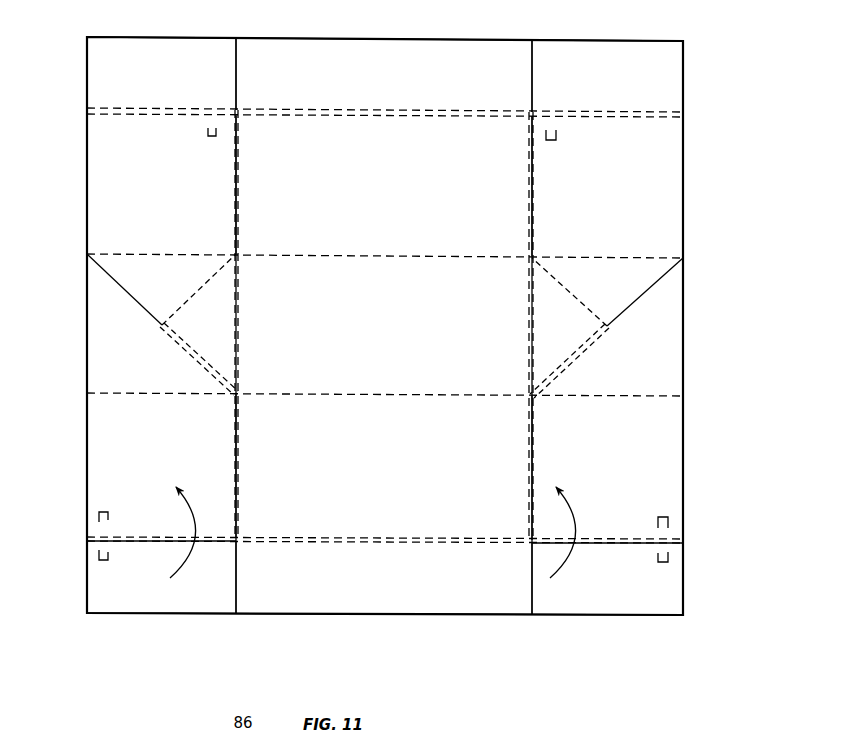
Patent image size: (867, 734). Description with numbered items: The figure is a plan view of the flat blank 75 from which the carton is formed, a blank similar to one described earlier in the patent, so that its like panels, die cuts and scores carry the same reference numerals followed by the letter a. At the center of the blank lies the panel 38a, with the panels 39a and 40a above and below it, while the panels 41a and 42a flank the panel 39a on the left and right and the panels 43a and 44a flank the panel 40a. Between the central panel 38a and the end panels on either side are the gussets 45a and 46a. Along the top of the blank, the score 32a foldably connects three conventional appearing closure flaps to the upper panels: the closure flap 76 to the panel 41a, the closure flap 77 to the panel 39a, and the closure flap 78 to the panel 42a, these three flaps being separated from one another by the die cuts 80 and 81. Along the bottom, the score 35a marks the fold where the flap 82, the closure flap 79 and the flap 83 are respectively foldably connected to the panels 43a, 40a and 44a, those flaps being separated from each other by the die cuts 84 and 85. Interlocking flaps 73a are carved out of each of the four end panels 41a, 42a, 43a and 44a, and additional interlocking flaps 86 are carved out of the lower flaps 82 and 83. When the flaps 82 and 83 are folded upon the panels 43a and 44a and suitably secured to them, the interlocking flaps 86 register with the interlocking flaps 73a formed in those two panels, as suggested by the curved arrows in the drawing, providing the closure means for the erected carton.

The blank 75 is at (708, 150).
The closure flap 76 is at (150, 62).
The closure flap 77 is at (382, 60).
The closure flap 78 is at (612, 62).
The closure flap 79 is at (398, 598).
The die cut 80 is at (236, 70).
The die cut 81 is at (533, 62).
The flap 82 is at (207, 593).
The flap 83 is at (628, 603).
The die cut 84 is at (234, 575).
The die cut 85 is at (531, 578).
The interlocking flap 86 is at (108, 557).
The score 32a is at (325, 116).
The score 35a is at (328, 540).
The panel 38a is at (384, 325).
The panel 39a is at (384, 186).
The panel 40a is at (384, 466).
The panel 41a is at (161, 184).
The panel 42a is at (607, 187).
The panel 43a is at (161, 465).
The panel 44a is at (607, 468).
The gusset 45a is at (113, 310).
The gusset 46a is at (655, 331).
The interlocking flap 73a is at (215, 137).